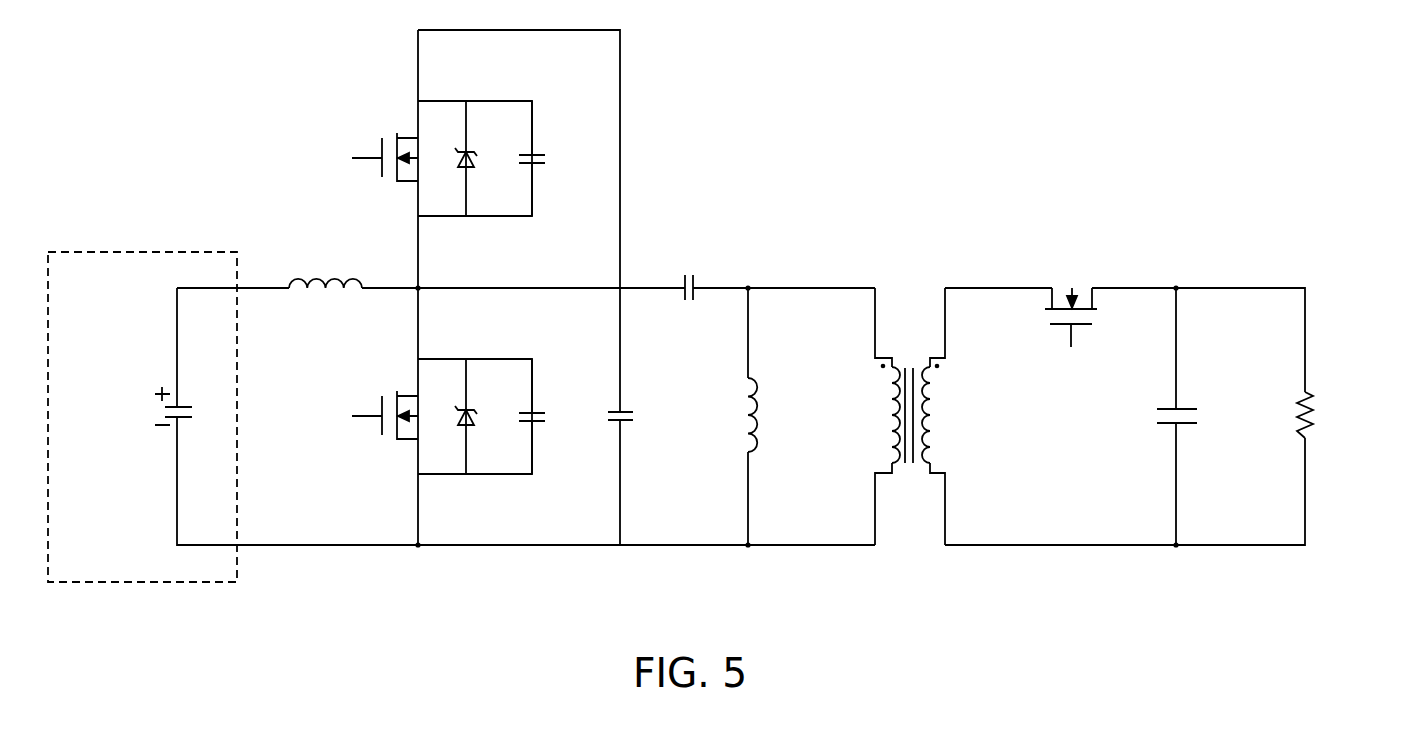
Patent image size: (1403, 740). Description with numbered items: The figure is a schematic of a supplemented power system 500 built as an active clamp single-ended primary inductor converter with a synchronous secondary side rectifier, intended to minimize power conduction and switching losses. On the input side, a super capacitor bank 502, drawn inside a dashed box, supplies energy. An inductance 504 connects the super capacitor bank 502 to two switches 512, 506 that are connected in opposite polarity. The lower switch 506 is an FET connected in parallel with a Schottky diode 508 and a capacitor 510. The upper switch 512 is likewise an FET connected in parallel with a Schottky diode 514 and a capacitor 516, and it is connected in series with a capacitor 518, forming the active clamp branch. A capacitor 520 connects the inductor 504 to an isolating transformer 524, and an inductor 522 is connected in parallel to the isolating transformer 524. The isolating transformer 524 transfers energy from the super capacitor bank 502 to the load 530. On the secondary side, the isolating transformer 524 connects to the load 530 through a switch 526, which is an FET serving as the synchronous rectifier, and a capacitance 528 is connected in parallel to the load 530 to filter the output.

The supplemented power system 500 is at (1070, 136).
The super capacitor bank 502 is at (163, 415).
The inductance 504 is at (297, 278).
The switch 506 is at (388, 441).
The Schottky diode 508 is at (470, 426).
The capacitor 510 is at (540, 410).
The switch 512 is at (388, 183).
The Schottky diode 514 is at (472, 168).
The capacitor 516 is at (540, 150).
The capacitor 518 is at (635, 415).
The capacitor 520 is at (690, 272).
The inductor 522 is at (762, 406).
The isolating transformer 524 is at (912, 478).
The switch 526 is at (1075, 287).
The capacitance 528 is at (1155, 416).
The load 530 is at (1316, 412).